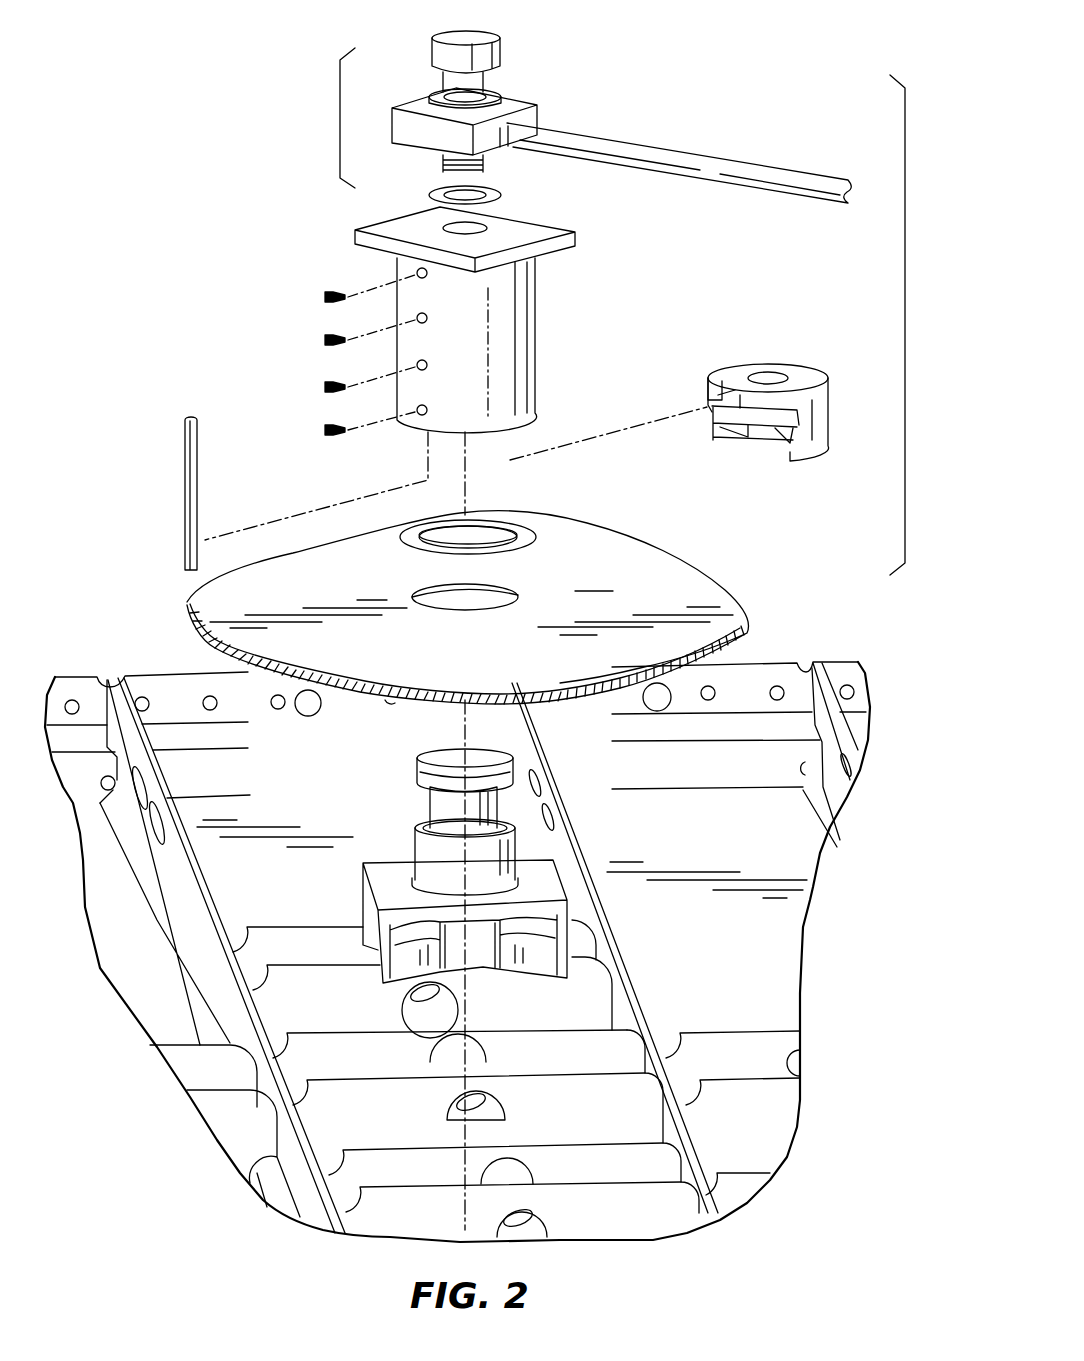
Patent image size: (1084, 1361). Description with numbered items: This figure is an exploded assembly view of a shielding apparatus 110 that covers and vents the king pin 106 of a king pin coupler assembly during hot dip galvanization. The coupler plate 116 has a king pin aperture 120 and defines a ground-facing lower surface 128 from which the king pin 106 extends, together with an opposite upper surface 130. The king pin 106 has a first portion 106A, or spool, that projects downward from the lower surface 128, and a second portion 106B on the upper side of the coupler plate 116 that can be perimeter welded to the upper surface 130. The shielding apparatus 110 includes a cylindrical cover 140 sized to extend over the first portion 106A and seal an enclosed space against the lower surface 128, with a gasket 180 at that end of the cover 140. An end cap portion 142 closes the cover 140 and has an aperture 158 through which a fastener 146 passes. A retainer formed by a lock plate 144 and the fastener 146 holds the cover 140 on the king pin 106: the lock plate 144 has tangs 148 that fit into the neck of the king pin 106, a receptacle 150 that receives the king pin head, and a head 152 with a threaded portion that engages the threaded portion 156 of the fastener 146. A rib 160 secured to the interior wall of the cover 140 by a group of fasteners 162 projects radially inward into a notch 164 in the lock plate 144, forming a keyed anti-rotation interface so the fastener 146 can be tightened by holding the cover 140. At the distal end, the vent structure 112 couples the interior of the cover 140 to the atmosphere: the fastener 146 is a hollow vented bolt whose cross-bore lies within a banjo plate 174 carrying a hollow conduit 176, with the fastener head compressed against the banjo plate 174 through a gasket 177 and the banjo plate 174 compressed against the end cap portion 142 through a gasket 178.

The king pin 106 is at (356, 871).
The first portion 106A is at (453, 807).
The second portion 106B is at (530, 965).
The shielding apparatus 110 is at (905, 325).
The vent structure 112 is at (340, 118).
The coupler plate 116 is at (698, 603).
The king pin aperture 120 is at (505, 583).
The ground-facing surface 128 is at (594, 577).
The upper surface 130 is at (620, 684).
The cover 140 is at (528, 333).
The end cap portion 142 is at (560, 242).
The lock plate 144 is at (700, 388).
The fastener 146 is at (492, 62).
The tangs 148 is at (790, 443).
The receptacle 150 is at (730, 420).
The head 152 is at (803, 372).
The threaded portion 156 is at (455, 170).
The aperture 158 is at (455, 228).
The rib 160 is at (183, 508).
The fasteners 162 is at (310, 290).
The notch 164 is at (722, 378).
The banjo plate 174 is at (432, 106).
The hollow conduit 176 is at (660, 148).
The gasket 177 is at (500, 97).
The gasket 178 is at (490, 195).
The gasket 180 is at (525, 535).